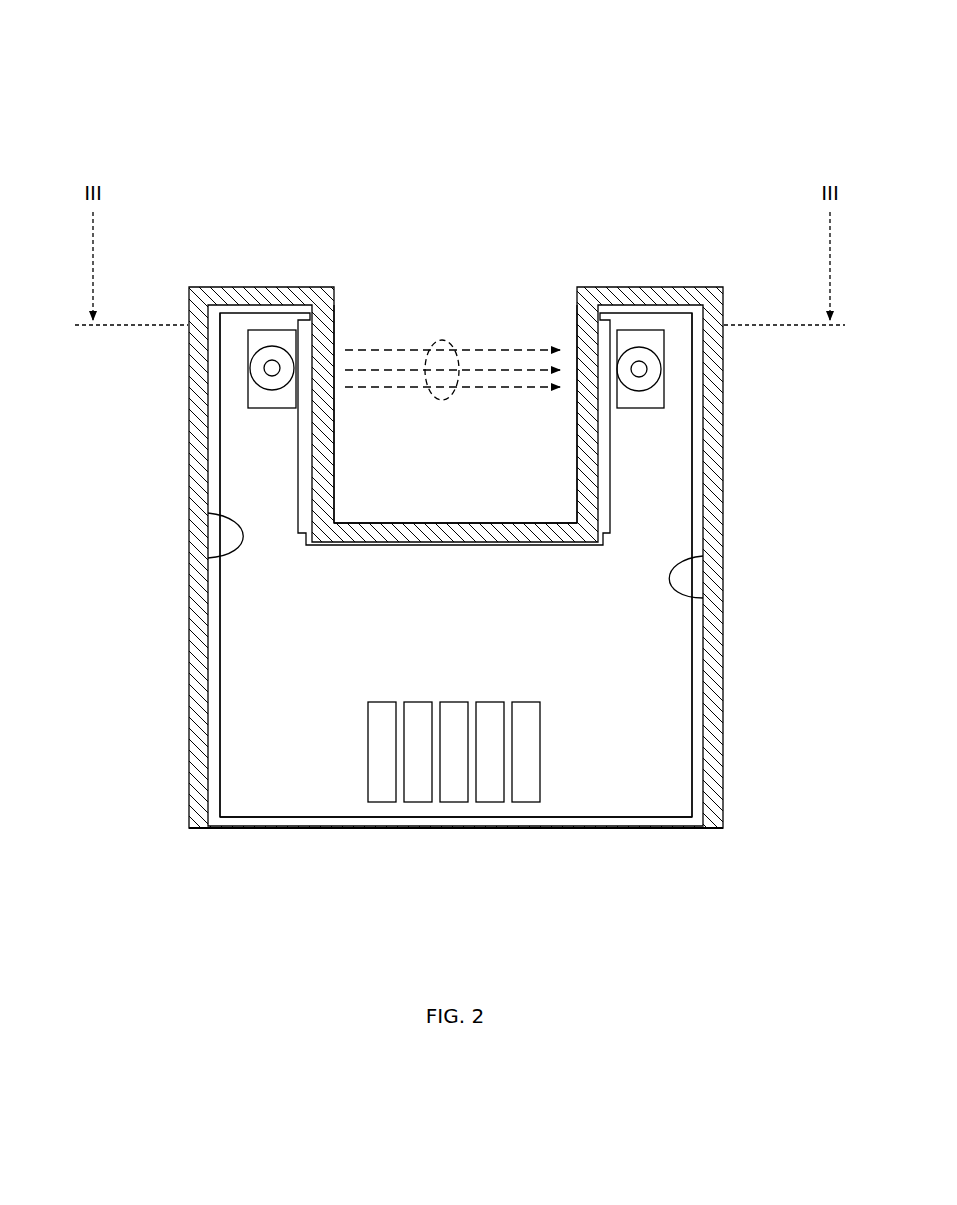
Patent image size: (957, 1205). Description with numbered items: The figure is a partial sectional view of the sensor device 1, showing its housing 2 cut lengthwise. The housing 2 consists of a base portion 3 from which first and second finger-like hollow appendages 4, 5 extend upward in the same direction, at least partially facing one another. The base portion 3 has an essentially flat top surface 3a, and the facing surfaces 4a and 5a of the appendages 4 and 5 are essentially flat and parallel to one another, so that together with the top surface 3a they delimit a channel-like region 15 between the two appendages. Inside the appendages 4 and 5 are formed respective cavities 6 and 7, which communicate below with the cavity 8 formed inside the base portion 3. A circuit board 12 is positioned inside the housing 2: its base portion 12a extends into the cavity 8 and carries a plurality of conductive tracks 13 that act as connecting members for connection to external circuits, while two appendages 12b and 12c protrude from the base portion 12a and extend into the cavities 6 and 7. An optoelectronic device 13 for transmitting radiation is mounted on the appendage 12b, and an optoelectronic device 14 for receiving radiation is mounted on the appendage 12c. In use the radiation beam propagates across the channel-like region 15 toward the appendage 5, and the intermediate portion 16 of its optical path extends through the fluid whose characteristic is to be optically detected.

The sensor device 1 is at (561, 185).
The housing 2 is at (187, 702).
The base portion 3 is at (723, 678).
The top surface 3a is at (467, 523).
The first appendage 4 is at (268, 287).
The facing surface of first appendage 4a is at (334, 460).
The second appendage 5 is at (640, 287).
The facing surface of second appendage 5a is at (577, 460).
The cavity of first appendage 6 is at (190, 558).
The cavity of second appendage 7 is at (703, 592).
The cavity of base portion 8 is at (444, 631).
The circuit board 12 is at (289, 820).
The base portion of circuit board 12a is at (632, 775).
The first appendage of circuit board 12b is at (248, 435).
The second appendage of circuit board 12c is at (665, 440).
The conductive tracks / optoelectronic transmitting device 13 is at (258, 360).
The optoelectronic receiving device 14 is at (648, 360).
The channel-like region 15 is at (426, 481).
The intermediate portion of optical path 16 is at (442, 340).